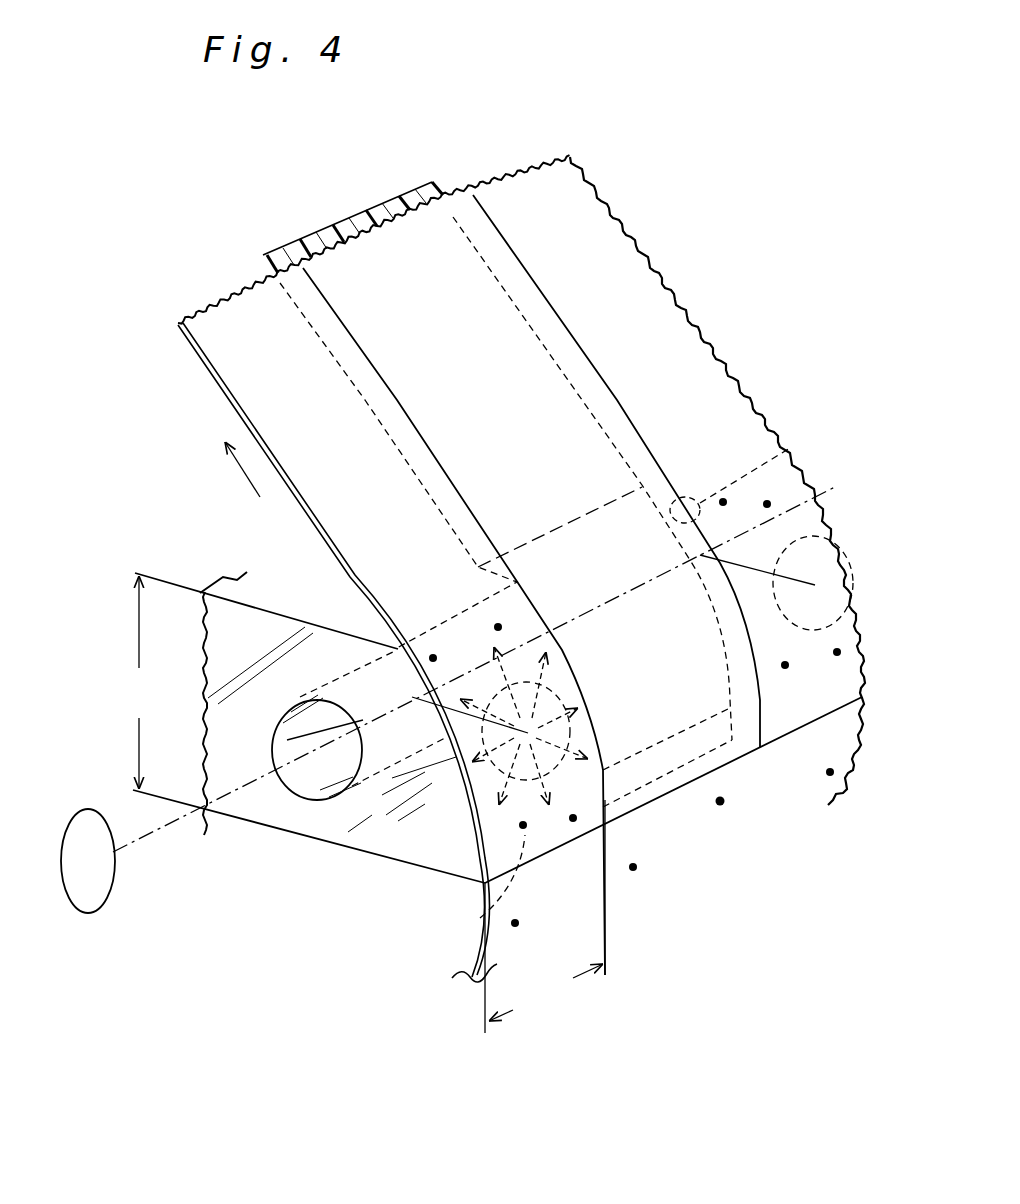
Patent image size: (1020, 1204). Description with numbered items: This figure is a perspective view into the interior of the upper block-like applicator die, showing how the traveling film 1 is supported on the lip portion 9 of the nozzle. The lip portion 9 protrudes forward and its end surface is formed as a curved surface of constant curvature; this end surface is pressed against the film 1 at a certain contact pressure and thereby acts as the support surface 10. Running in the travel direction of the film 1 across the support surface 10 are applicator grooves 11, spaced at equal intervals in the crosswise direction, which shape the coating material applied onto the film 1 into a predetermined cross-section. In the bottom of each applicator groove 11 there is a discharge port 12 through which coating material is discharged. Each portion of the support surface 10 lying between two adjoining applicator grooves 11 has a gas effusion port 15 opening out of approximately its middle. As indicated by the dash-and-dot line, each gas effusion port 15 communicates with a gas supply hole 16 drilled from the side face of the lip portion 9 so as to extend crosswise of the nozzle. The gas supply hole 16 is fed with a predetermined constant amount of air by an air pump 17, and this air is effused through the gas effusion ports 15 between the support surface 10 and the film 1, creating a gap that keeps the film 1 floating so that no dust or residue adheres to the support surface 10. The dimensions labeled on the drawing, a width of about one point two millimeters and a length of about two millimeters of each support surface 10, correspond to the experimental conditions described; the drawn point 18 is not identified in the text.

The film 1 is at (216, 340).
The lip portion 9 is at (407, 903).
The support surface 10 is at (480, 918).
The applicator groove 11 is at (705, 500).
The discharge port 12 is at (702, 746).
The gas effusion port 15 is at (487, 812).
The gas supply hole 16 is at (320, 766).
The air pump 17 is at (92, 903).
The measuring point 18 is at (720, 802).